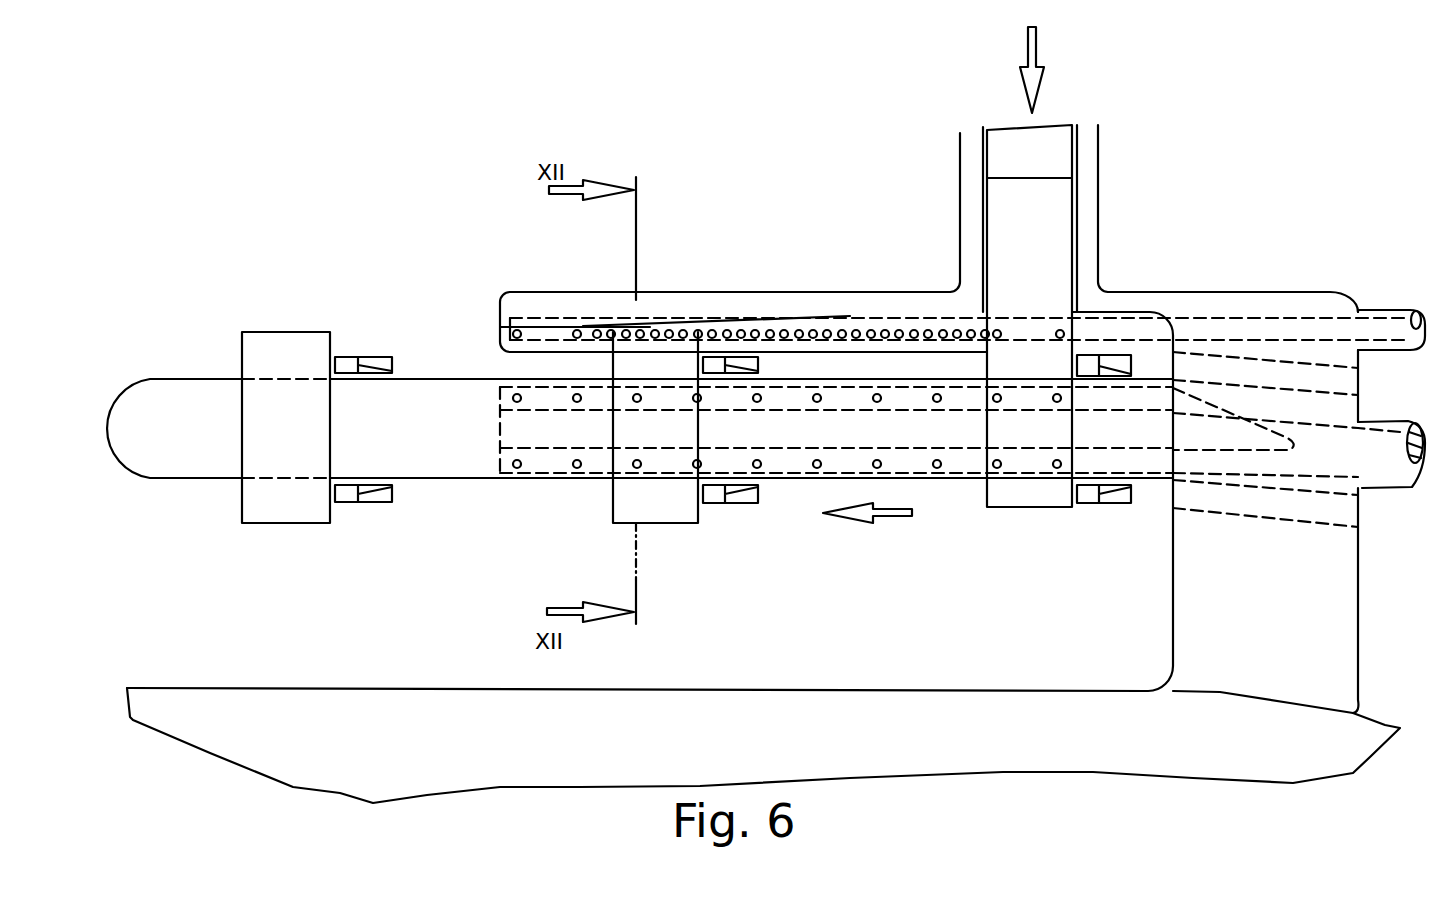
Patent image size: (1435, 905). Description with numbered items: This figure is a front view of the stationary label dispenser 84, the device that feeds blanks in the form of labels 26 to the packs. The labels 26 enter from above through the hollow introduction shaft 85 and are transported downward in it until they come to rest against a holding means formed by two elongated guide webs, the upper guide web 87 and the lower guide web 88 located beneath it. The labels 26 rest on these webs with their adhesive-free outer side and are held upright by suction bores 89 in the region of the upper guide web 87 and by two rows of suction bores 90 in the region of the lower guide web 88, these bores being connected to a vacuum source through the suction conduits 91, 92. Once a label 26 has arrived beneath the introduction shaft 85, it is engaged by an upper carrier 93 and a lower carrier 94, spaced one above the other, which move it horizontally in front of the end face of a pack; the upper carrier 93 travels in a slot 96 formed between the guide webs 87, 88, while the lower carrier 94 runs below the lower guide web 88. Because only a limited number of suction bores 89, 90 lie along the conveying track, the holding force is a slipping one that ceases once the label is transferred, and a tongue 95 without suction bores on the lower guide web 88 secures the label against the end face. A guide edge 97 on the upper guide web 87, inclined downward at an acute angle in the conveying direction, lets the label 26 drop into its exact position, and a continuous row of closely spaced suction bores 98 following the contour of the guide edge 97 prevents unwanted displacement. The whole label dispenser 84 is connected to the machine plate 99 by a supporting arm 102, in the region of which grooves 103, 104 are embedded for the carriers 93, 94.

The label 26 is at (260, 507).
The label dispenser 84 is at (775, 226).
The introduction shaft 85 is at (1097, 187).
The upper guide web 87 is at (650, 302).
The lower guide web 88 is at (806, 490).
The suction bores 89 is at (1075, 310).
The suction bores 90 is at (994, 468).
The suction conduit 91 is at (522, 318).
The suction conduit 92 is at (548, 462).
The upper carrier 93 is at (343, 356).
The lower carrier 94 is at (362, 503).
The tongue 95 is at (440, 478).
The slot 96 is at (792, 367).
The guide edge 97 is at (690, 323).
The suction bores 98 is at (748, 327).
The machine plate 99 is at (848, 720).
The supporting arm 102 is at (1200, 640).
The groove 103 is at (1343, 377).
The groove 104 is at (1297, 505).